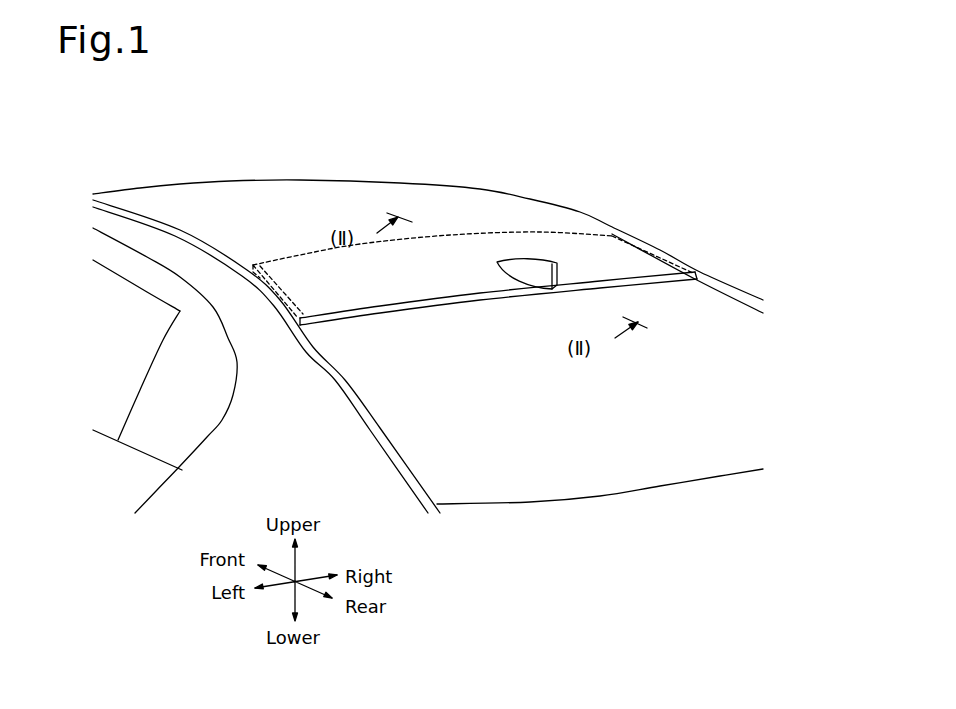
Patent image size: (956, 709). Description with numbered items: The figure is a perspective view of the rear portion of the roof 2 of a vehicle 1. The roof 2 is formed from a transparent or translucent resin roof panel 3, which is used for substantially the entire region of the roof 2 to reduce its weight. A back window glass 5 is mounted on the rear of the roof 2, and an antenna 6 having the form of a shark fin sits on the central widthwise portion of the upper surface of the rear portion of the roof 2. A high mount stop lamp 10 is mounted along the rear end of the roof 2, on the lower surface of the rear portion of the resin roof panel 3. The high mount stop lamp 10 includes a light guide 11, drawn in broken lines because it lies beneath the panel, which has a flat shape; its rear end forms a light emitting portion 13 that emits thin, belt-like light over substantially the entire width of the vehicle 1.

The vehicle 1 is at (457, 169).
The roof 2 is at (428, 194).
The resin roof panel 3 is at (376, 182).
The back window glass 5 is at (715, 330).
The antenna 6 is at (530, 268).
The high mount stop lamp 10 is at (637, 275).
The light guide 11 is at (312, 280).
The light emitting portion 13 is at (611, 284).